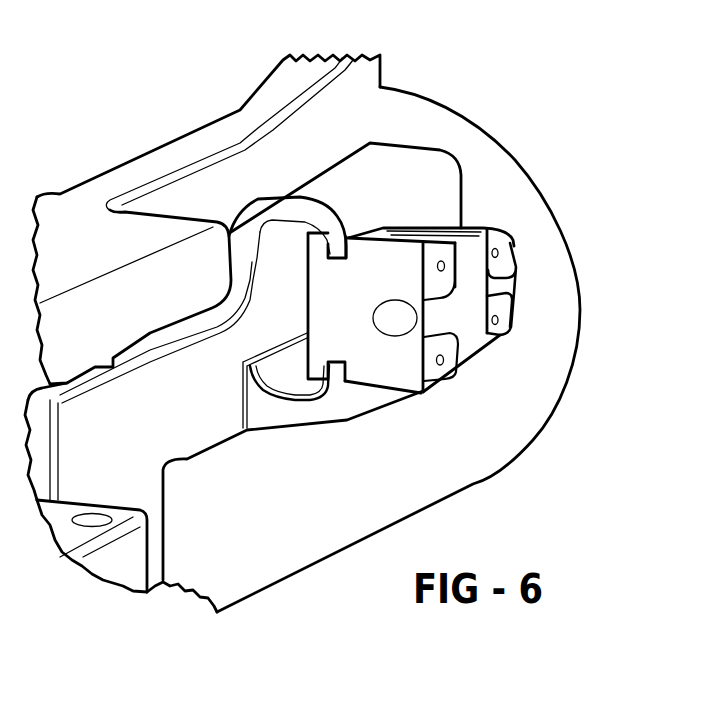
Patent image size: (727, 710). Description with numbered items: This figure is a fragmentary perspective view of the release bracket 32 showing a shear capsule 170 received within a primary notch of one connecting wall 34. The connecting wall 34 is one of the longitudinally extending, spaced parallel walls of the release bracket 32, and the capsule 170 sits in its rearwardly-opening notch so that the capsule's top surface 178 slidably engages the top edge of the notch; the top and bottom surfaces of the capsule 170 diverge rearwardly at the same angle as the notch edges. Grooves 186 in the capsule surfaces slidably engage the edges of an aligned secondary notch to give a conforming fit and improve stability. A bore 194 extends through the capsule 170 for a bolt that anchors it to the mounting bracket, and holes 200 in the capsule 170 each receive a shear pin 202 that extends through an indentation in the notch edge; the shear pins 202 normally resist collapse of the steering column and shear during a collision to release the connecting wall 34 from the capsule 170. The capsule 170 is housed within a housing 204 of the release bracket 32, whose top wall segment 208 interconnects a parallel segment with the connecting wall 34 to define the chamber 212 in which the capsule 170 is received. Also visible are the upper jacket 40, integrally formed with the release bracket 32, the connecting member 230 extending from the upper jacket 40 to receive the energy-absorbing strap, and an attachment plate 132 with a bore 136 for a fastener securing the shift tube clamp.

The release bracket 32 is at (271, 438).
The connecting wall 34 is at (468, 222).
The upper jacket 40 is at (500, 450).
The attachment plate 132 is at (123, 547).
The bore 136 is at (97, 518).
The shear capsule 170 is at (512, 253).
The top surface 178 is at (437, 230).
The groove 186 is at (334, 252).
The bore 194 is at (398, 336).
The hole 200 is at (499, 250).
The shear pin 202 is at (458, 286).
The housing 204 is at (280, 178).
The top wall segment 208 is at (407, 157).
The chamber 212 is at (264, 336).
The connecting member 230 is at (382, 72).